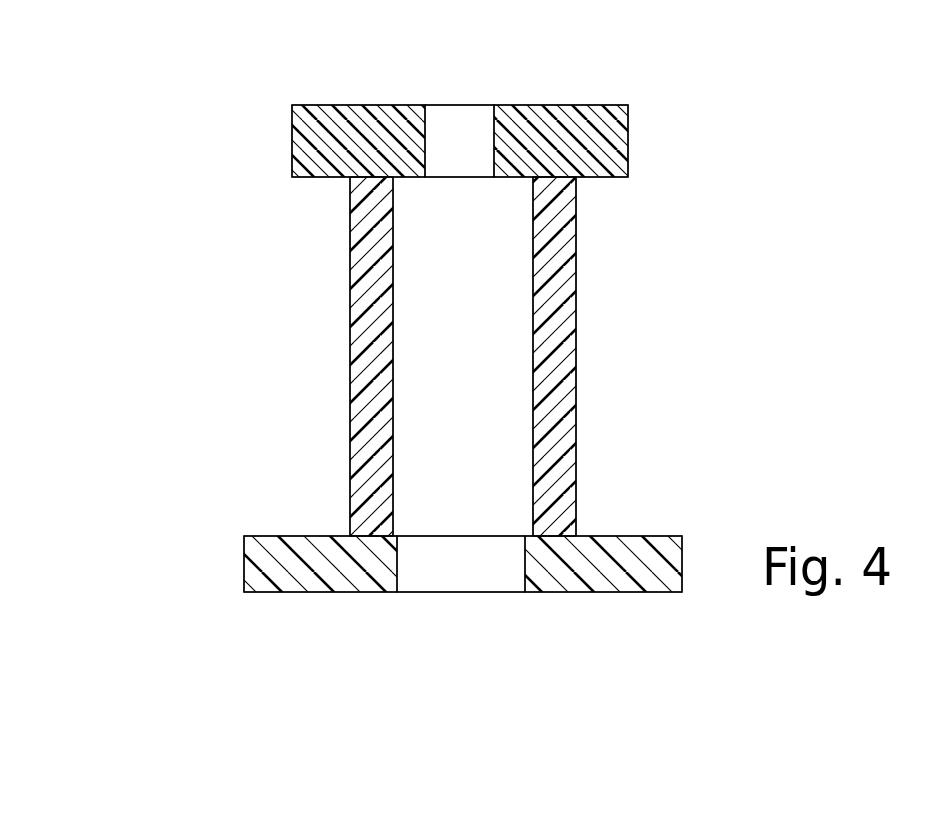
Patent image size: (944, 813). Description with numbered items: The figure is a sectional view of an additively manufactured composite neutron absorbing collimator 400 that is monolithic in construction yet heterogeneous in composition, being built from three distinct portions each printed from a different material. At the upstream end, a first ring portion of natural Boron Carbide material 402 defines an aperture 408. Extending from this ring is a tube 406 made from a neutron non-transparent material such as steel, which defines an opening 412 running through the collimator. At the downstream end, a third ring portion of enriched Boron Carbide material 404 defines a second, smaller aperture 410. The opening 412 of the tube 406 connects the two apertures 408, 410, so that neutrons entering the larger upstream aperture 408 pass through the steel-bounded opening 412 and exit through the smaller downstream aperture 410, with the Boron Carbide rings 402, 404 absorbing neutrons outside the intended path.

The composite neutron absorbing collimator 400 is at (258, 367).
The natural Boron Carbide material 402 is at (683, 553).
The enriched Boron Carbide material 404 is at (628, 148).
The tube 406 is at (576, 340).
The aperture 408 is at (465, 596).
The second aperture 410 is at (462, 102).
The opening 412 is at (502, 244).